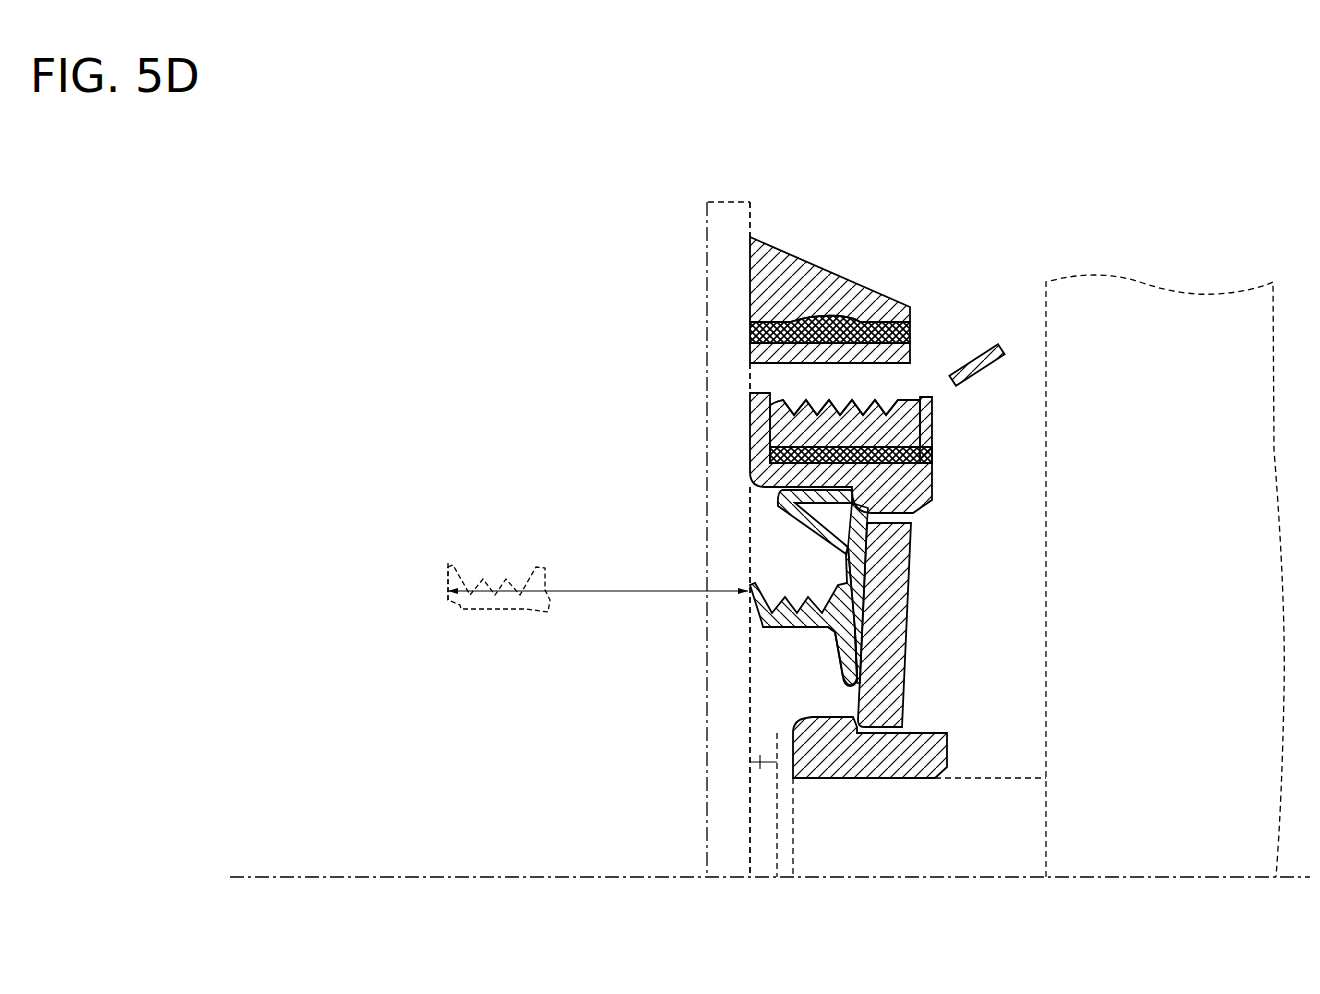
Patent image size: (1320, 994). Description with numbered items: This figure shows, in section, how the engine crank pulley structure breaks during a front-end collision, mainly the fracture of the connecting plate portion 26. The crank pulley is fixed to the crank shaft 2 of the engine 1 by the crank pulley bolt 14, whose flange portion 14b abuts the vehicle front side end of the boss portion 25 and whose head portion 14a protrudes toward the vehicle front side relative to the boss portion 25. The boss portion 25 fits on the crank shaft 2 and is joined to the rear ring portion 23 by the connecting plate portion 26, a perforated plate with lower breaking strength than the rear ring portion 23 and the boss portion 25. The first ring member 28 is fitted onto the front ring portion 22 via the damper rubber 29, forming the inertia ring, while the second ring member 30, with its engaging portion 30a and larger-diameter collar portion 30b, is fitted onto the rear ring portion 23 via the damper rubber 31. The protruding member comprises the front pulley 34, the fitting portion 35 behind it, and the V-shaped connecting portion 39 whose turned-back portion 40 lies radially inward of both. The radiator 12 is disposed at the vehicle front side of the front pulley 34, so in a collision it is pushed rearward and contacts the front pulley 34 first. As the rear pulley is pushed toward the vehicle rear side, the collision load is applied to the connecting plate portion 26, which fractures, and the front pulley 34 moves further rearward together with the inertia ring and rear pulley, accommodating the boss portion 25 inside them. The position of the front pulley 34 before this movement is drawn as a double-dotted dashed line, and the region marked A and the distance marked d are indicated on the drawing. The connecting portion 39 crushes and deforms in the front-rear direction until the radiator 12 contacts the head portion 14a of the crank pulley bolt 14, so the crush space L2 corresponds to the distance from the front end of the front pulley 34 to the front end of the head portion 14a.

The engine 1 is at (1147, 292).
The crank shaft 2 is at (995, 793).
The radiator 12 is at (727, 220).
The crank pulley bolt 14 is at (762, 755).
The head portion 14a is at (759, 870).
The flange portion 14b is at (786, 870).
The front ring portion 22 is at (900, 353).
The rear ring portion 23 is at (850, 470).
The boss portion 25 is at (867, 779).
The connecting plate portion 26 is at (897, 667).
The first ring member 28 is at (796, 257).
The damper rubber 29 is at (750, 330).
The second ring member 30 is at (920, 417).
The engaging portion 30a is at (852, 408).
The collar portion 30b is at (997, 345).
The damper rubber 31 is at (895, 457).
The front pulley 34 is at (780, 628).
The fitting portion 35 is at (840, 498).
The connecting portion 39 is at (862, 573).
The turned-back portion (apex) 40 is at (845, 674).
The assembly region A is at (885, 270).
The offset distance d is at (750, 413).
The crush space (crushing deformation amount) L2 is at (598, 579).